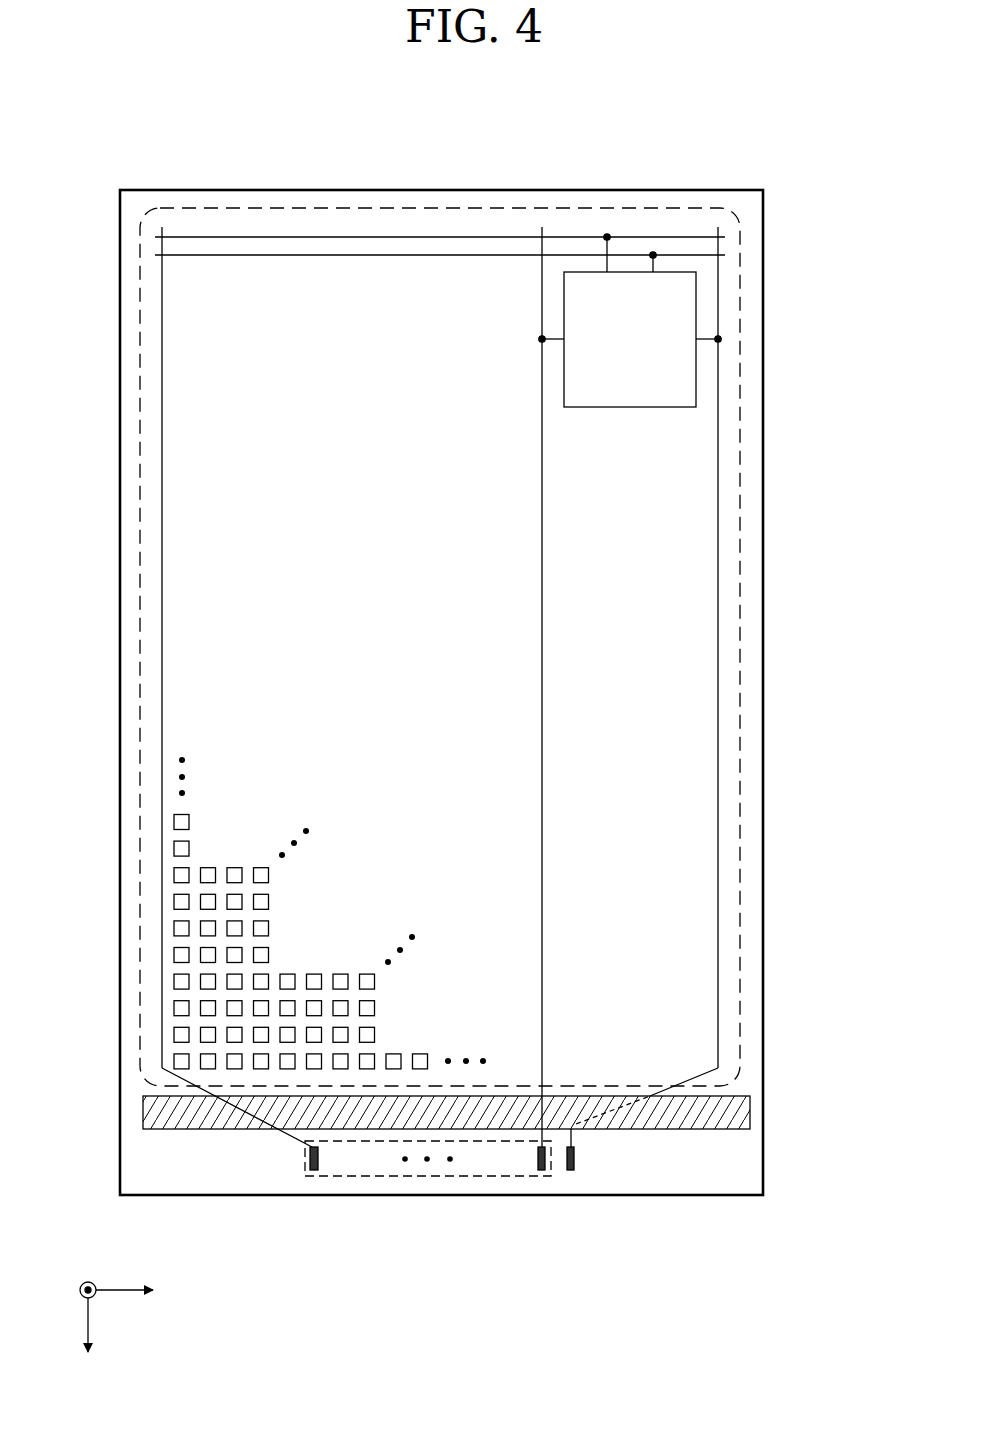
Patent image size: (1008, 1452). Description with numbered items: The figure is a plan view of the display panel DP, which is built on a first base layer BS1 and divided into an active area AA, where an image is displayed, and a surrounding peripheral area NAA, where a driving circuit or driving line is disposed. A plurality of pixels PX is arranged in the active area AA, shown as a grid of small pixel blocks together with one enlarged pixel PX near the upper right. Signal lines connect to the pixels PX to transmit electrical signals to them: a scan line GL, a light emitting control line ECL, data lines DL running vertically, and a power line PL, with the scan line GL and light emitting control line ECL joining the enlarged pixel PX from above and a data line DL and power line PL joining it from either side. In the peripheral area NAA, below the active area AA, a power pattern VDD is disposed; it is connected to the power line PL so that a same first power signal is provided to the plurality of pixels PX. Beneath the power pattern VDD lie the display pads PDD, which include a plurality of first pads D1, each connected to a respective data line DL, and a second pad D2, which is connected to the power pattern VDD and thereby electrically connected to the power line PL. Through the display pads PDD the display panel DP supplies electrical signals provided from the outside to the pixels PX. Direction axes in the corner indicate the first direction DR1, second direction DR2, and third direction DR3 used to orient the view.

The display panel DP is at (787, 130).
The first base layer BS1 is at (765, 748).
The active area AA is at (730, 545).
The peripheral area NAA is at (750, 600).
The data line DL is at (162, 272).
The scan line GL is at (579, 237).
The light emitting control line ECL is at (445, 255).
The power line PL is at (718, 248).
The pixel PX is at (696, 311).
The power pattern VDD is at (750, 1113).
The display pads PDD is at (477, 1197).
The first pad D1 is at (423, 1177).
The second pad D2 is at (604, 1176).
The first direction DR1 is at (144, 1290).
The second direction DR2 is at (88, 1339).
The third direction DR3 is at (88, 1276).